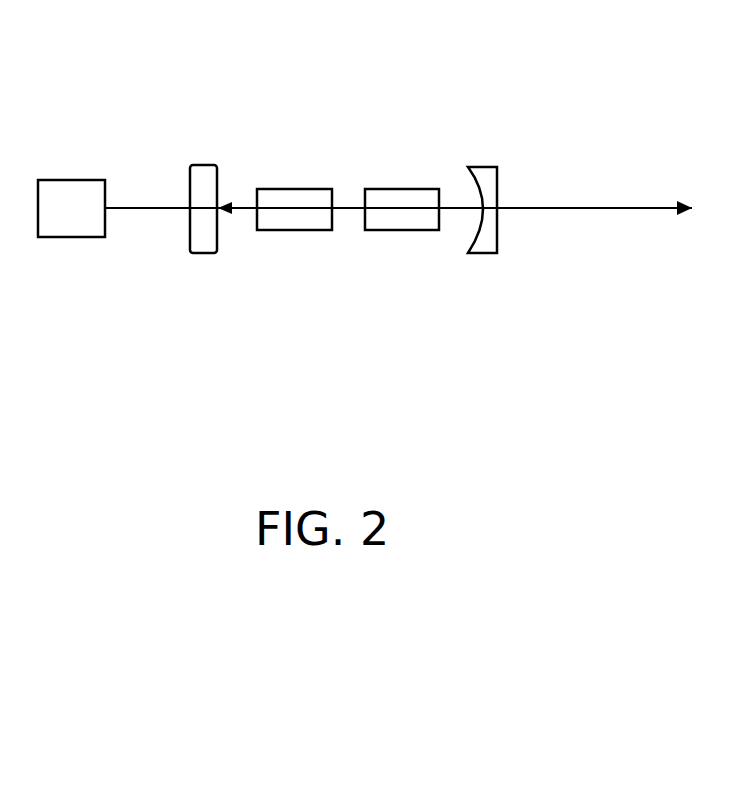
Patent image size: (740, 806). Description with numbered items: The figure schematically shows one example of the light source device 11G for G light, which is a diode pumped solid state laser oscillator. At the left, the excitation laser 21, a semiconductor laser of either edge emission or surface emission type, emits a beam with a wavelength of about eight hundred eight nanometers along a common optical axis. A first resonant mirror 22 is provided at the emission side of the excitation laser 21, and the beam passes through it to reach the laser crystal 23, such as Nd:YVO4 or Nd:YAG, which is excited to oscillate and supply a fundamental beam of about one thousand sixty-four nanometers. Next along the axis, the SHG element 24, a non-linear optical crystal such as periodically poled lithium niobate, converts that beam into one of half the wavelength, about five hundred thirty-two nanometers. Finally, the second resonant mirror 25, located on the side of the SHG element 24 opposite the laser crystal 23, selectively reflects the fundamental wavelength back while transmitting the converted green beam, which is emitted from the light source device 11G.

The light source device for G light 11G is at (138, 65).
The excitation laser 21 is at (73, 180).
The first resonant mirror 22 is at (203, 165).
The laser crystal 23 is at (300, 189).
The SHG element 24 is at (410, 189).
The second resonant mirror 25 is at (488, 167).